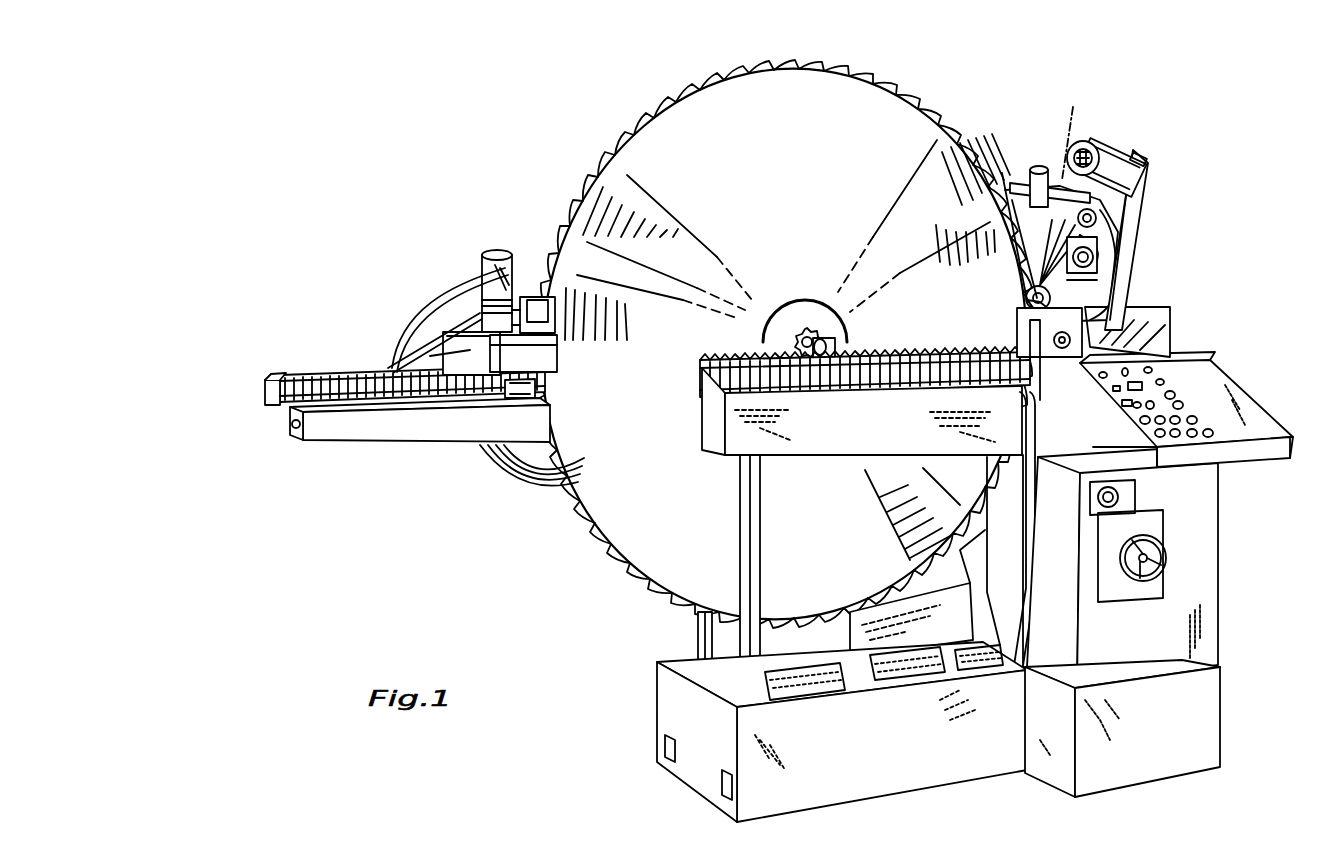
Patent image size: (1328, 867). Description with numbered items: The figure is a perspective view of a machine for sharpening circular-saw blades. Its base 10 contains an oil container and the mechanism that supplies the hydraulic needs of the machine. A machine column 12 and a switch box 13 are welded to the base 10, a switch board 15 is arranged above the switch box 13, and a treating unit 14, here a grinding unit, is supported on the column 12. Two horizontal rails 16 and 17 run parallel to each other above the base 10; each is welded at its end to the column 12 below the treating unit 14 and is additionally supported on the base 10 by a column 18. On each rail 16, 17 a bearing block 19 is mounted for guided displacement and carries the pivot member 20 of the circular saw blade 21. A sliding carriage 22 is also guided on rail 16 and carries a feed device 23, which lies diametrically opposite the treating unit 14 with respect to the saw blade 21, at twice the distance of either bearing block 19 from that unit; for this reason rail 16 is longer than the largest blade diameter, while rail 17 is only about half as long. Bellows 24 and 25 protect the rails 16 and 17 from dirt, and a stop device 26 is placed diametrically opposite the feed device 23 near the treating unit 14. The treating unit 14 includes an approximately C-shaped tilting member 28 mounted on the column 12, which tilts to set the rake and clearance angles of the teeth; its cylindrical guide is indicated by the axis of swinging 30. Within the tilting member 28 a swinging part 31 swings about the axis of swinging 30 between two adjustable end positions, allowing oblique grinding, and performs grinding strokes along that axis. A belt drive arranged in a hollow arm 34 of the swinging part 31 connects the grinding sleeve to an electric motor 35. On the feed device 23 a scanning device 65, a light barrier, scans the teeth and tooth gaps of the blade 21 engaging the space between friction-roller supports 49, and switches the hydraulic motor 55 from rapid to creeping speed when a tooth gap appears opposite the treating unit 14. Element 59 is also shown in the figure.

The base 10 is at (677, 714).
The machine column 12 is at (1033, 586).
The switch box 13 is at (1200, 617).
The treating unit 14 is at (1163, 214).
The switch board 15 is at (1212, 378).
The horizontal rail 16 is at (368, 430).
The horizontal rail 17 is at (894, 440).
The column 18 is at (750, 641).
The bearing block 19 is at (835, 346).
The pivot member 20 is at (805, 333).
The circular saw blade 21 is at (648, 142).
The sliding carriage 22 is at (508, 382).
The feed device 23 is at (433, 277).
The bellows 24 is at (300, 375).
The bellows 25 is at (703, 378).
The stop device 26 is at (1168, 340).
The tilting member 28 is at (1014, 193).
The axis of swinging 30 is at (1075, 110).
The swinging part 31 is at (1100, 269).
The hollow arm 34 is at (1133, 222).
The electric motor 35 is at (1125, 155).
The friction-roller supports 49 is at (540, 358).
The hydraulic motor 55 is at (492, 258).
The clamp block 59 is at (465, 362).
The scanning device 65 is at (545, 297).